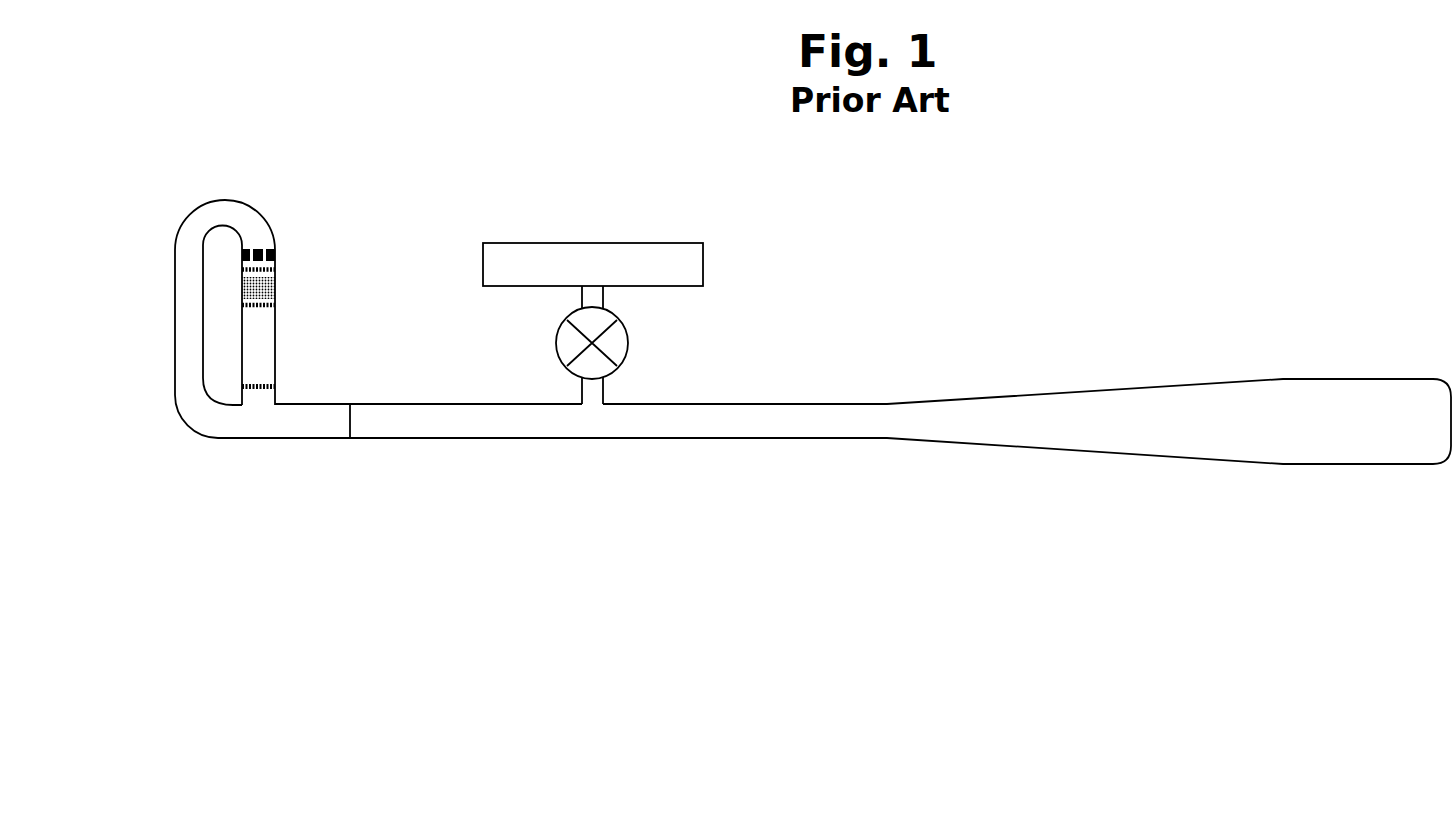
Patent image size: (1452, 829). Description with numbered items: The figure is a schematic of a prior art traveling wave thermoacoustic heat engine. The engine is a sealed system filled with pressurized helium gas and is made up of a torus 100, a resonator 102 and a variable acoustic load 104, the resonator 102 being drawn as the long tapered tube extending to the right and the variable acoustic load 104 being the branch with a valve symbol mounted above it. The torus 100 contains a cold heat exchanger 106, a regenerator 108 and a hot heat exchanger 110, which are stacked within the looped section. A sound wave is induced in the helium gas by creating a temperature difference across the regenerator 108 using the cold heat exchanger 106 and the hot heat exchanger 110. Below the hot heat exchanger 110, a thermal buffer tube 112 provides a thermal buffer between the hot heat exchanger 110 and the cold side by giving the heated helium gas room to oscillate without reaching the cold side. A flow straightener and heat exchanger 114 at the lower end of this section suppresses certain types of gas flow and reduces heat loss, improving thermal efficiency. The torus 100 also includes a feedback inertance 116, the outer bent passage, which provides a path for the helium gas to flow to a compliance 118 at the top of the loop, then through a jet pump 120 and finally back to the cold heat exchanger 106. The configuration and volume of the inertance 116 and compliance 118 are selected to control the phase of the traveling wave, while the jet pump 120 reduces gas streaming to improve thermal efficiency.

The torus 100 is at (218, 167).
The resonator 102 is at (1000, 408).
The variable acoustic load 104 is at (523, 252).
The cold heat exchanger 106 is at (273, 268).
The regenerator 108 is at (279, 277).
The hot heat exchanger 110 is at (263, 306).
The thermal buffer tube 112 is at (232, 387).
The flow straightener and heat exchanger 114 is at (277, 387).
The feedback inertance 116 is at (195, 422).
The compliance 118 is at (267, 212).
The jet pump 120 is at (276, 251).